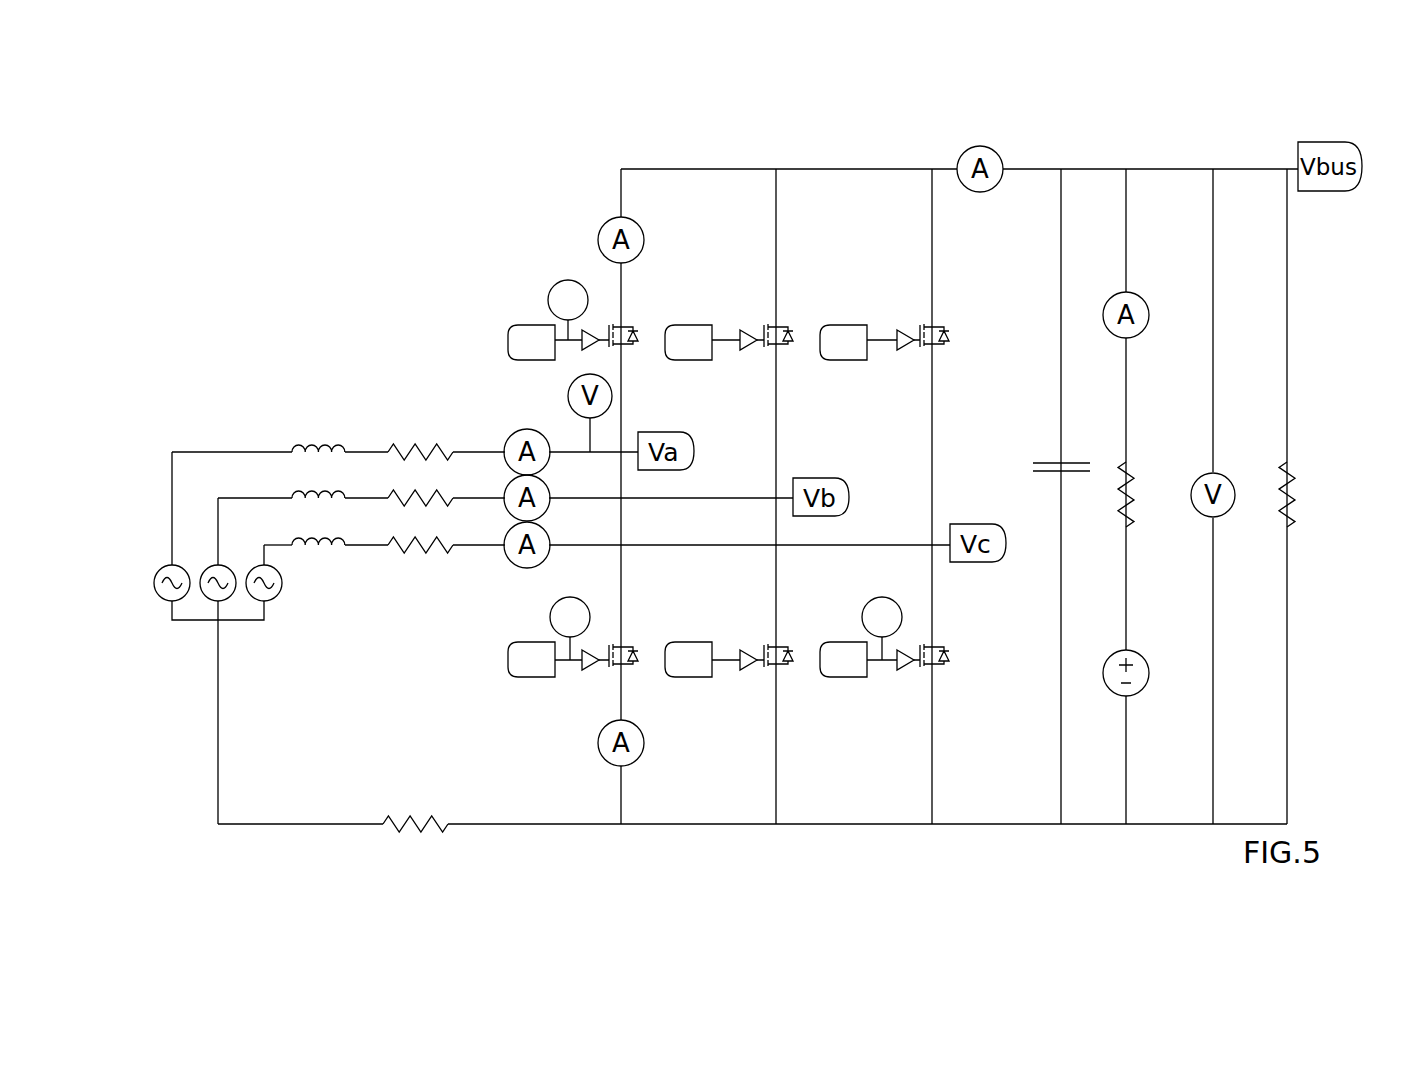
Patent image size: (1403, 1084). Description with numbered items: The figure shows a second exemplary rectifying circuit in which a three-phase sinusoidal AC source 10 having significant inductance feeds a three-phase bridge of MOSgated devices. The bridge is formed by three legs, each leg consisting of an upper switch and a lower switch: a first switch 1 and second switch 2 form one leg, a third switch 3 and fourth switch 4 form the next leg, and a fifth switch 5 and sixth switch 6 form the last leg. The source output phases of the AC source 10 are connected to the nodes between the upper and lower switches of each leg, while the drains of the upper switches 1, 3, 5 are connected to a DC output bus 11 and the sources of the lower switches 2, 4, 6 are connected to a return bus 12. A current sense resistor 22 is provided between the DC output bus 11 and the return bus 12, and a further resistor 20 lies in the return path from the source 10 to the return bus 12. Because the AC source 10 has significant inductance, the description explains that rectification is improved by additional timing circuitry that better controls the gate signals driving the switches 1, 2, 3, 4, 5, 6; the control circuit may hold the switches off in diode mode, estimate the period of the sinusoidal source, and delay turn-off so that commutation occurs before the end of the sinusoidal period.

The switching transistor Q1 1 is at (634, 311).
The switching transistor Q2 2 is at (628, 625).
The switching transistor Q3 3 is at (788, 311).
The switching transistor Q4 4 is at (785, 695).
The switching transistor Q5 5 is at (943, 311).
The switching transistor Q6 6 is at (952, 682).
The three-phase AC source 10 is at (197, 638).
The positive DC bus 11 is at (1158, 168).
The negative DC bus 12 is at (1098, 824).
The neutral resistor 20 is at (448, 835).
The current sense resistor 22 is at (1150, 518).